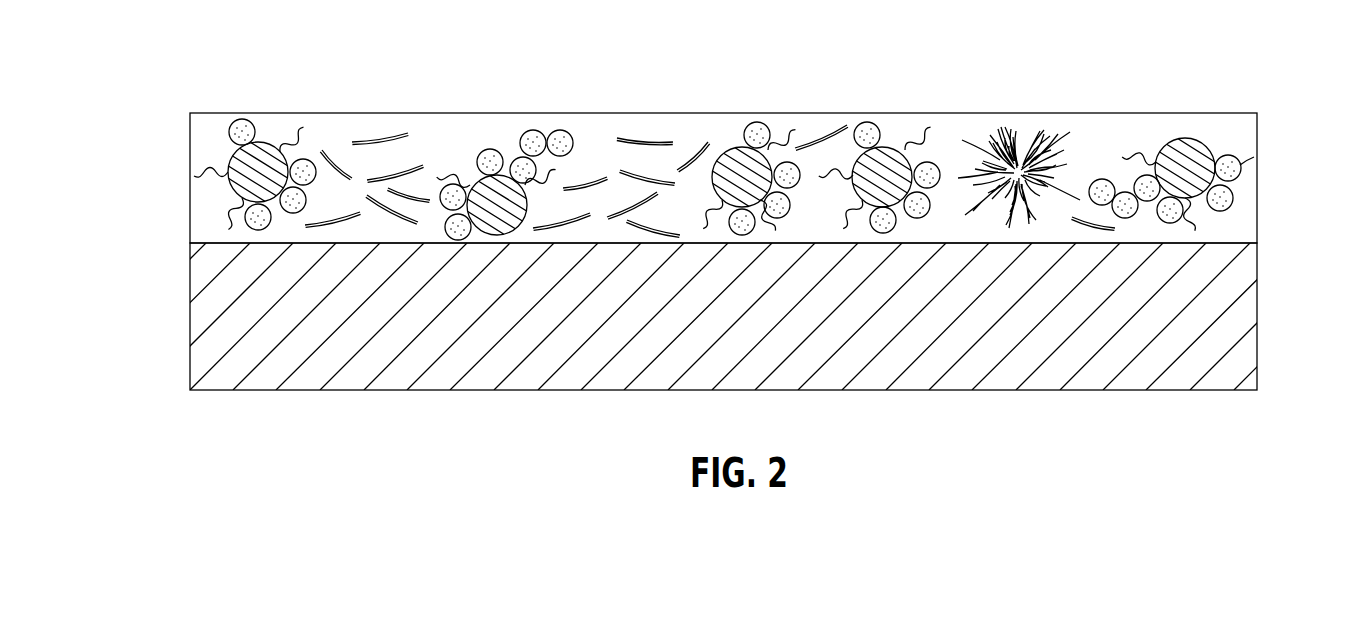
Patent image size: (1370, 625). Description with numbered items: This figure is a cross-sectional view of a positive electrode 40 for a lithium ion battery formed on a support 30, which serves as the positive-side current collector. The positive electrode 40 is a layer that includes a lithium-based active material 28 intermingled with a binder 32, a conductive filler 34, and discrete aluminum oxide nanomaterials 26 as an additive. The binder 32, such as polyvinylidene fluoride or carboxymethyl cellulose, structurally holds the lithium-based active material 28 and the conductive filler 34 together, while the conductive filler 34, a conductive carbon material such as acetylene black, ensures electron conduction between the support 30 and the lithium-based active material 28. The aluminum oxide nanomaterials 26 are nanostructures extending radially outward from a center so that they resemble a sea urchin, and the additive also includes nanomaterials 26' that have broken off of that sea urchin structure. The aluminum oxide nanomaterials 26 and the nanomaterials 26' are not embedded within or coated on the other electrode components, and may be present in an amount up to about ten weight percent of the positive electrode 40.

The positive electrode 40 is at (190, 192).
The support 30 is at (1207, 310).
The aluminum oxide nanomaterials 26 is at (1022, 133).
The nanomaterials 26' is at (710, 141).
The lithium-based active material 28 is at (1195, 180).
The binder 32 is at (1127, 173).
The conductive filler 34 is at (1242, 160).